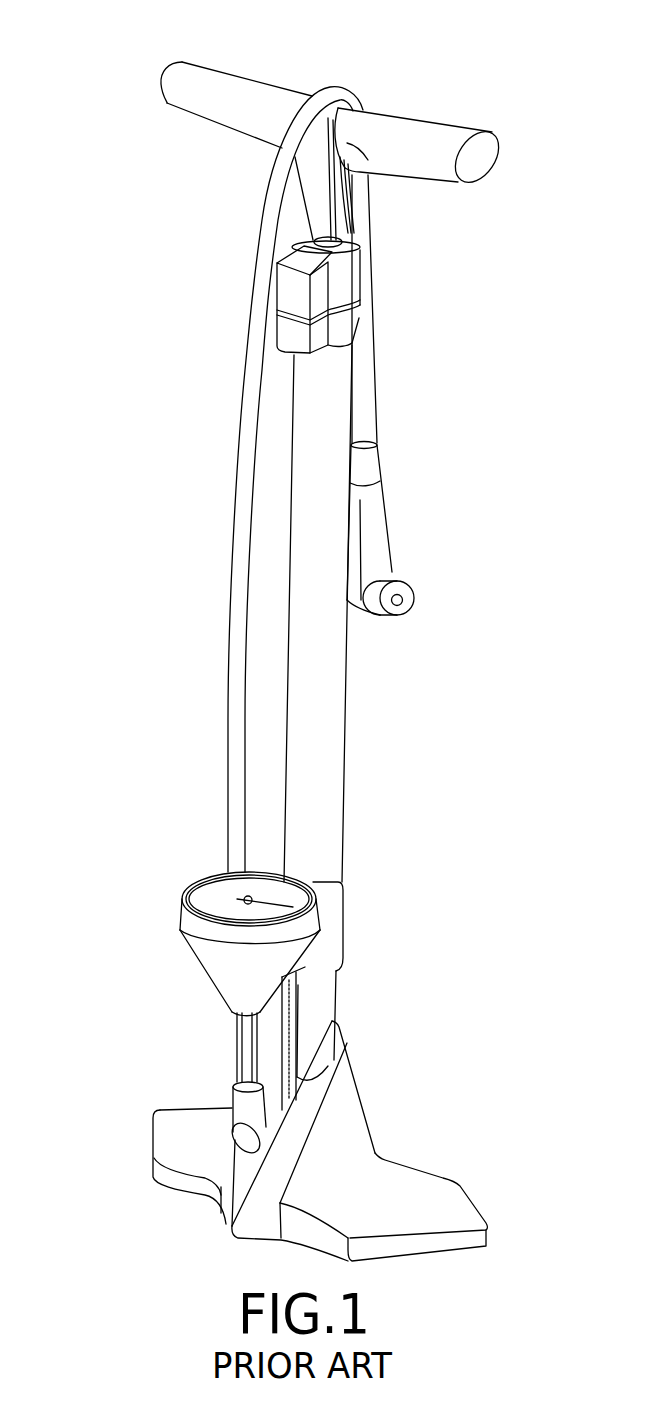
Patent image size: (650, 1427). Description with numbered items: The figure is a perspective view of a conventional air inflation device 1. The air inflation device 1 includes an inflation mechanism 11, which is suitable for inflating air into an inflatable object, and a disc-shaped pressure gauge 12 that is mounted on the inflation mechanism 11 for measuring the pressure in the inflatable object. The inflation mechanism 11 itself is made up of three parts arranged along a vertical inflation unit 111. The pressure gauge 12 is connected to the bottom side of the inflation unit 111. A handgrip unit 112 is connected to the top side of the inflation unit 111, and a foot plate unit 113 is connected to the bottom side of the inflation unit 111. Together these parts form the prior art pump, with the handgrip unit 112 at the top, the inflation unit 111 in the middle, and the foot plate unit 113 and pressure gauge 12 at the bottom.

The air inflation device 1 is at (110, 77).
The inflation mechanism 11 is at (368, 915).
The inflation unit 111 is at (332, 681).
The handgrip unit 112 is at (437, 170).
The foot plate unit 113 is at (416, 1184).
The pressure gauge 12 is at (186, 886).